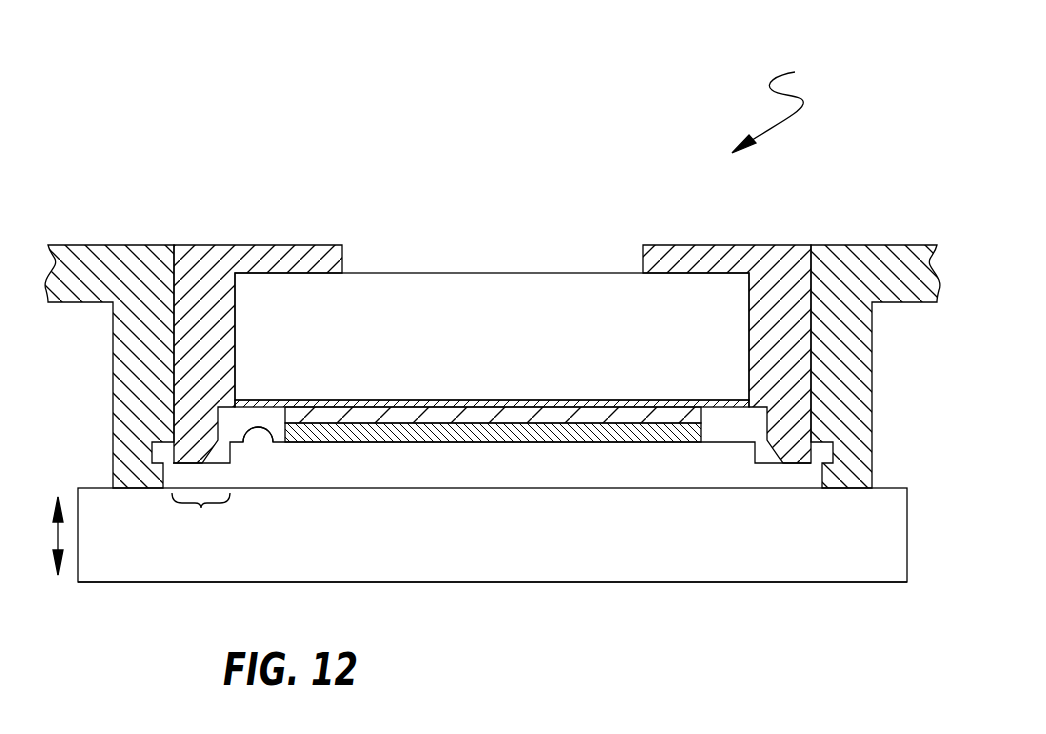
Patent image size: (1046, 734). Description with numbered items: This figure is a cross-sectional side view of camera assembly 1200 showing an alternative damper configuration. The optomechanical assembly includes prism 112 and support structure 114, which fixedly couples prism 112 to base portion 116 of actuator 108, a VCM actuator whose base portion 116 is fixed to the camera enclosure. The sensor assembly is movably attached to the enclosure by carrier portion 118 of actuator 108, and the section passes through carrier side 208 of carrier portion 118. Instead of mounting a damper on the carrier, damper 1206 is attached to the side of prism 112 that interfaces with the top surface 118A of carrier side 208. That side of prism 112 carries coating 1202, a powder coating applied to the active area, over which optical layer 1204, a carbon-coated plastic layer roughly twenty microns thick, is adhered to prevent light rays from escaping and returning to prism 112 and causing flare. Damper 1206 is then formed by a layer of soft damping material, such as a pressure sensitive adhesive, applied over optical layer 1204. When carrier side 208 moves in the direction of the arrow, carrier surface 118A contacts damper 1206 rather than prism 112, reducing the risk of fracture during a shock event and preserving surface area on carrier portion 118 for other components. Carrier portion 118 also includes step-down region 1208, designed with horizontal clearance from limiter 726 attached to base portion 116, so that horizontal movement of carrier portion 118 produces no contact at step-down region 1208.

The camera assembly 1200 is at (790, 107).
The base portion 116 is at (110, 245).
The support structure 114 is at (257, 245).
The prism 112 is at (510, 347).
The coating 1202 is at (254, 400).
The optical layer 1204 is at (600, 415).
The damper 1206 is at (621, 443).
The limiter 726 is at (163, 477).
The top surface of carrier side 118A is at (271, 445).
The step-down region 1208 is at (201, 514).
The carrier side 208 is at (510, 535).
The actuator 108 is at (908, 538).
The carrier portion 118 is at (632, 582).